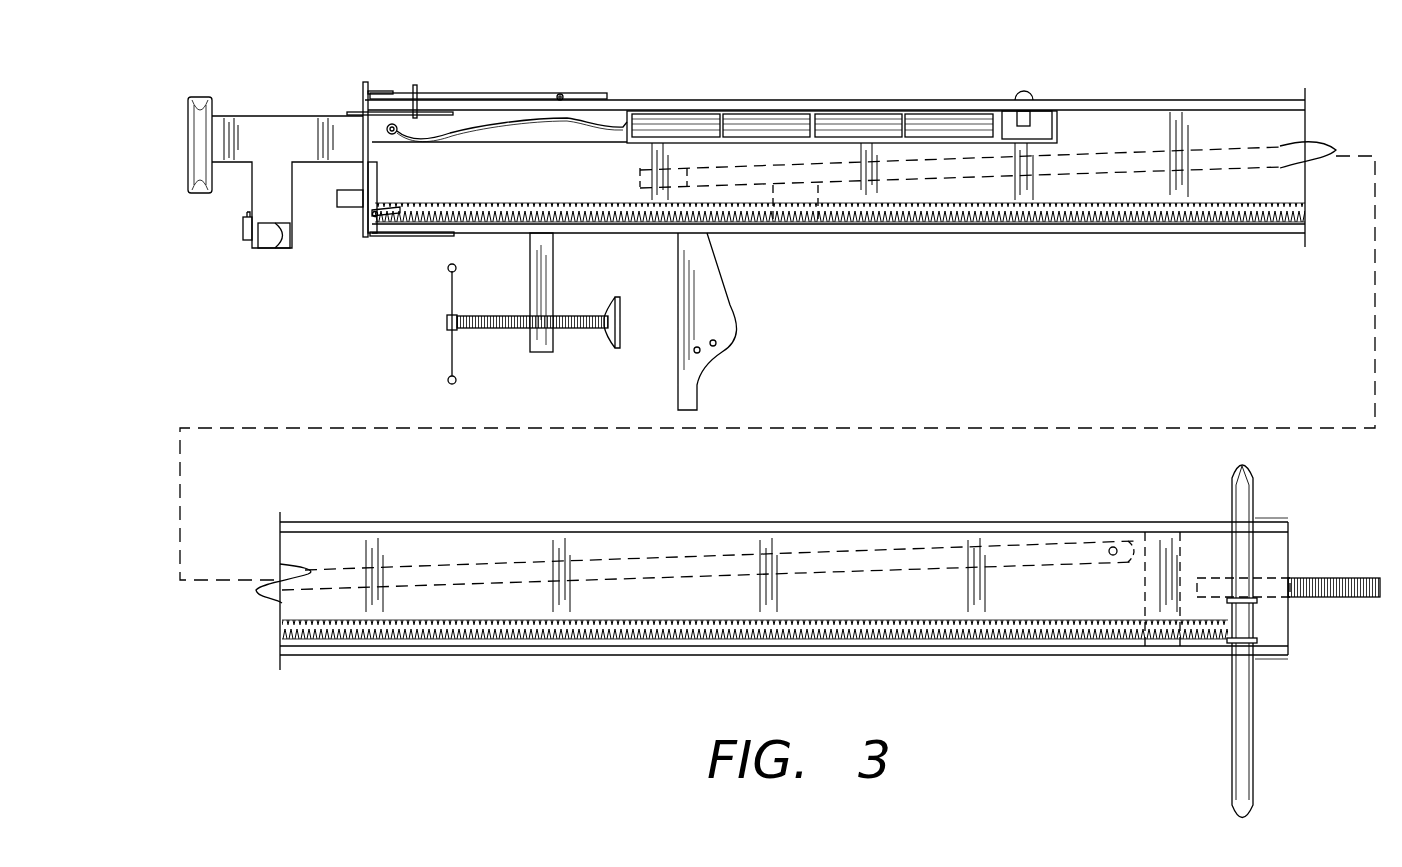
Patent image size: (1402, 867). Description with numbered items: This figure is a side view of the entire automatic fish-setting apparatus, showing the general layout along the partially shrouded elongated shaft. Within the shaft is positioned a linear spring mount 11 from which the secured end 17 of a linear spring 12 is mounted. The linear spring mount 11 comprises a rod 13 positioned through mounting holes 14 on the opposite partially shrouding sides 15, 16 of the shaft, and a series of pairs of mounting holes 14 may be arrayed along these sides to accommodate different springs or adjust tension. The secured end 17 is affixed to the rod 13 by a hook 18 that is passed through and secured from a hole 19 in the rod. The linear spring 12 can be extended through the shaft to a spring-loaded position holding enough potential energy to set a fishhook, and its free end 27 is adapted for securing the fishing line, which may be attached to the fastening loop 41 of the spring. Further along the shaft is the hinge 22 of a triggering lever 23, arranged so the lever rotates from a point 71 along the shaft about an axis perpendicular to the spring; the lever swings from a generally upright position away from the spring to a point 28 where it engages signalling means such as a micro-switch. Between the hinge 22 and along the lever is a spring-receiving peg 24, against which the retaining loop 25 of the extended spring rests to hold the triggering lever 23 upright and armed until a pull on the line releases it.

The linear spring mount 11 is at (1257, 641).
The linear spring 12 is at (1183, 197).
The rod 13 is at (1230, 508).
The mounting holes 14 is at (1253, 522).
The upper partially shrouding side 15 is at (1105, 102).
The partially shrouding side 16 is at (1197, 233).
The secured end of the linear spring 17 is at (1228, 622).
The hook 18 is at (1263, 600).
The hole 19 is at (1242, 625).
The hinge 22 is at (368, 215).
The triggering lever 23 is at (413, 140).
The spring-receiving peg 24 is at (370, 217).
The retaining loop 25 is at (378, 216).
The free end of the linear spring 27 is at (390, 217).
The point where the triggering lever engages signalling means 28 is at (275, 245).
The fastening loop 41 is at (377, 218).
The point along the elongated shaft 71 is at (360, 137).